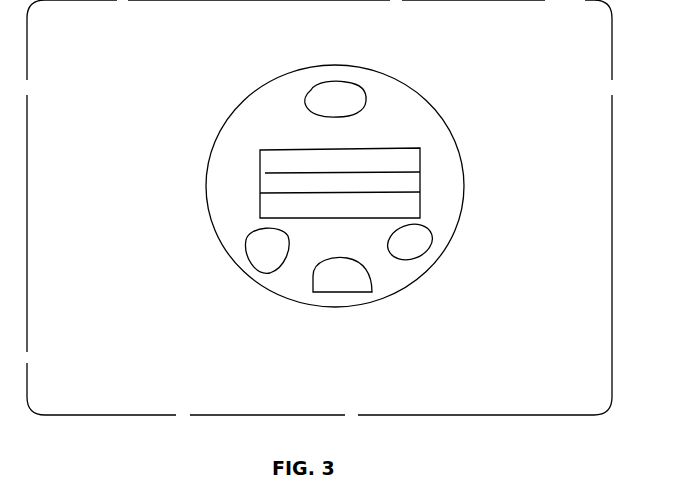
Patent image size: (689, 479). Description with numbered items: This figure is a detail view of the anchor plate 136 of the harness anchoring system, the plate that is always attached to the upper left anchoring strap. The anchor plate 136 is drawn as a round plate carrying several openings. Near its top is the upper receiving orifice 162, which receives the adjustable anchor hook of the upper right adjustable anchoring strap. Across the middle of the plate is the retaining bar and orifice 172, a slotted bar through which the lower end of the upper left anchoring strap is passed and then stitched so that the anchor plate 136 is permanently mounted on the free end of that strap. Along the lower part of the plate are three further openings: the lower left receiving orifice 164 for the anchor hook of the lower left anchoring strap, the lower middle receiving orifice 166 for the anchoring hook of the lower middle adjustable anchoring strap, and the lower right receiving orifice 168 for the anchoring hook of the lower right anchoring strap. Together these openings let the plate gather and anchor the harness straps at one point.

The anchor plate 136 is at (461, 372).
The upper receiving orifice 162 is at (358, 95).
The lower left receiving orifice 164 is at (260, 250).
The lower middle receiving orifice 166 is at (350, 278).
The lower right receiving orifice 168 is at (408, 240).
The retaining bar and orifice 172 is at (422, 180).